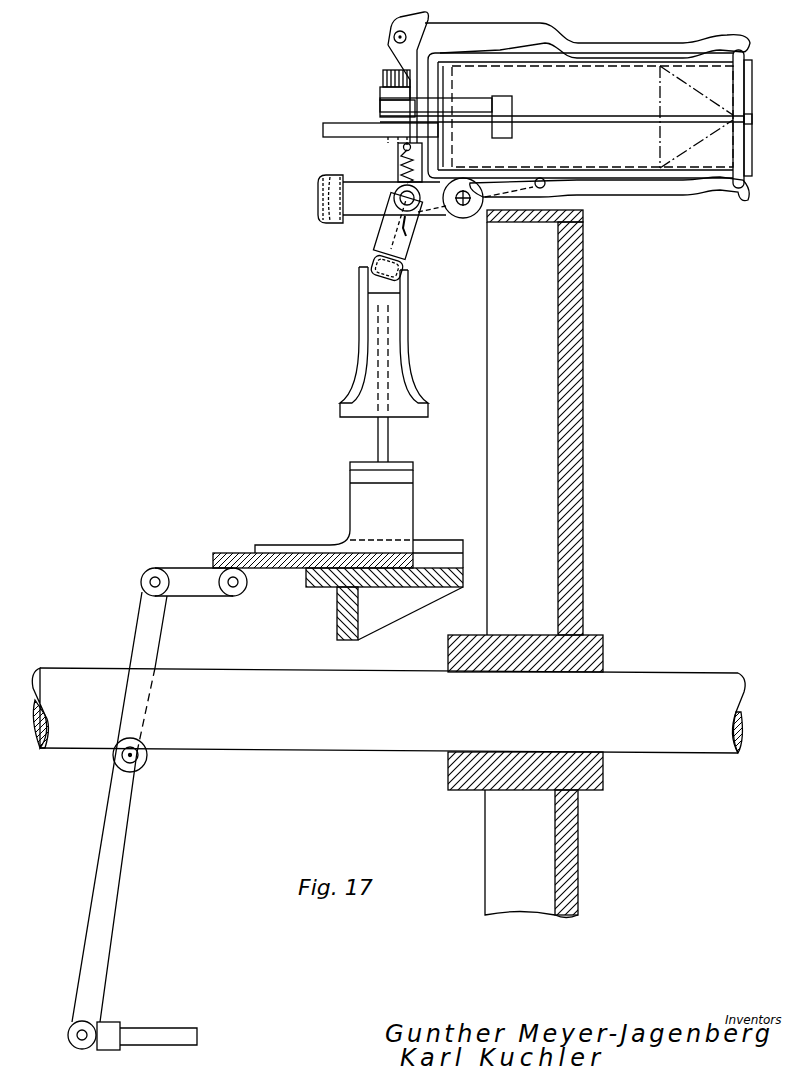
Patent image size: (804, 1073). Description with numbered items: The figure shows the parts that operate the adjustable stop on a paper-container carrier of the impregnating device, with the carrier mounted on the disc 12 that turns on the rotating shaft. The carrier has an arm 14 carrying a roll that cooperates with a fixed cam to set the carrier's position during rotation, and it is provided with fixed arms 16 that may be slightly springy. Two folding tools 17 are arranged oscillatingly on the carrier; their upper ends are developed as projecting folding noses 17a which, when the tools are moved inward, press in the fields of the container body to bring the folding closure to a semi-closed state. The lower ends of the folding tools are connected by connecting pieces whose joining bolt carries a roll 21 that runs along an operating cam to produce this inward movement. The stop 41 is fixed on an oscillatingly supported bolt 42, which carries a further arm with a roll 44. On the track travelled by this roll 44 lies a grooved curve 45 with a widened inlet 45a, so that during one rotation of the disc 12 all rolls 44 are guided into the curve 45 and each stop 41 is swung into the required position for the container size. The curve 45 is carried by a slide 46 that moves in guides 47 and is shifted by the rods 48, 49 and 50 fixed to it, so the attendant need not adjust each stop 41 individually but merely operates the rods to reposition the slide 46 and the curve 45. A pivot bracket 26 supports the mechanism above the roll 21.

The disc 12 is at (572, 350).
The arm 14 is at (373, 192).
The fixed arm 16 is at (583, 50).
The folding tool 17 is at (590, 118).
The folding nose 17a is at (740, 105).
The roll 21 is at (378, 80).
The pivot bracket 26 is at (426, 15).
The stop 41 is at (540, 189).
The bolt 42 is at (463, 207).
The roll 44 is at (403, 269).
The grooved curve 45 is at (362, 297).
The widened inlet 45a is at (348, 393).
The slide 46 is at (255, 553).
The guide 47 is at (345, 580).
The rod 48 is at (177, 588).
The rod 49 is at (110, 914).
The rod 50 is at (152, 1033).